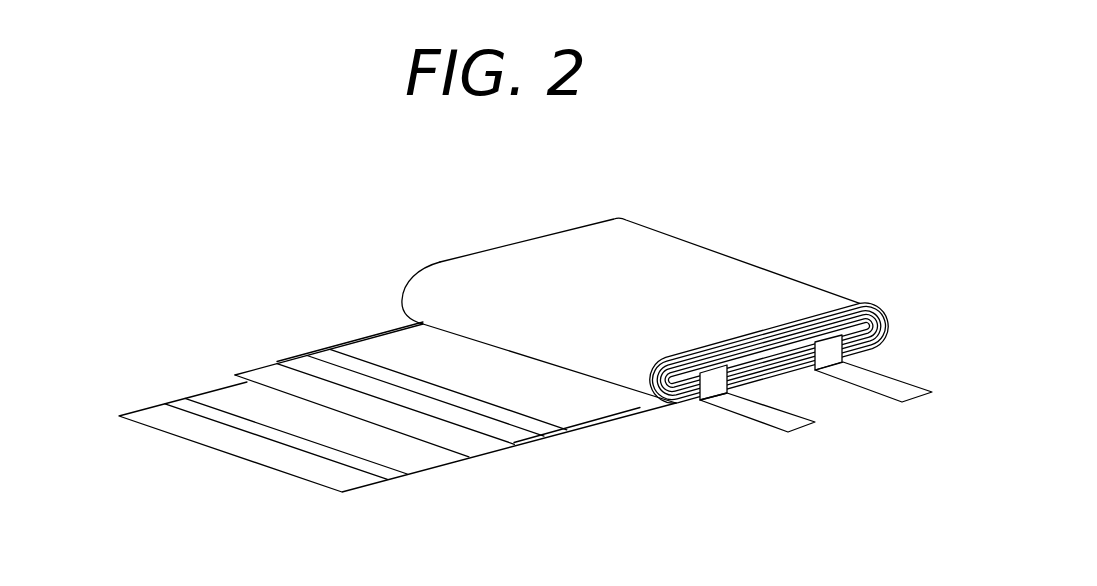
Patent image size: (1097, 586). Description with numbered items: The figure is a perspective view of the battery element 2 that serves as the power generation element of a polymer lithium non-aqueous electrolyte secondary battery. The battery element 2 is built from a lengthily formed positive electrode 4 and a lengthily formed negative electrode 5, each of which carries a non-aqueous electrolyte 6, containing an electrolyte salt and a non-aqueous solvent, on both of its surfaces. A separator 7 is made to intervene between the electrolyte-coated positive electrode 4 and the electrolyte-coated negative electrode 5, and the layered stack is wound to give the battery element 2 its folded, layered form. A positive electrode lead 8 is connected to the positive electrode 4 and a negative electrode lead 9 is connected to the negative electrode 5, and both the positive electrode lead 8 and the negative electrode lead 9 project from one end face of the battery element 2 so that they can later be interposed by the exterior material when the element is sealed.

The battery element 2 is at (316, 224).
The positive electrode 4 is at (313, 353).
The negative electrode 5 is at (182, 405).
The non-aqueous electrolyte 6 is at (305, 422).
The separator 7 is at (495, 456).
The positive electrode lead 8 is at (884, 390).
The negative electrode lead 9 is at (775, 420).